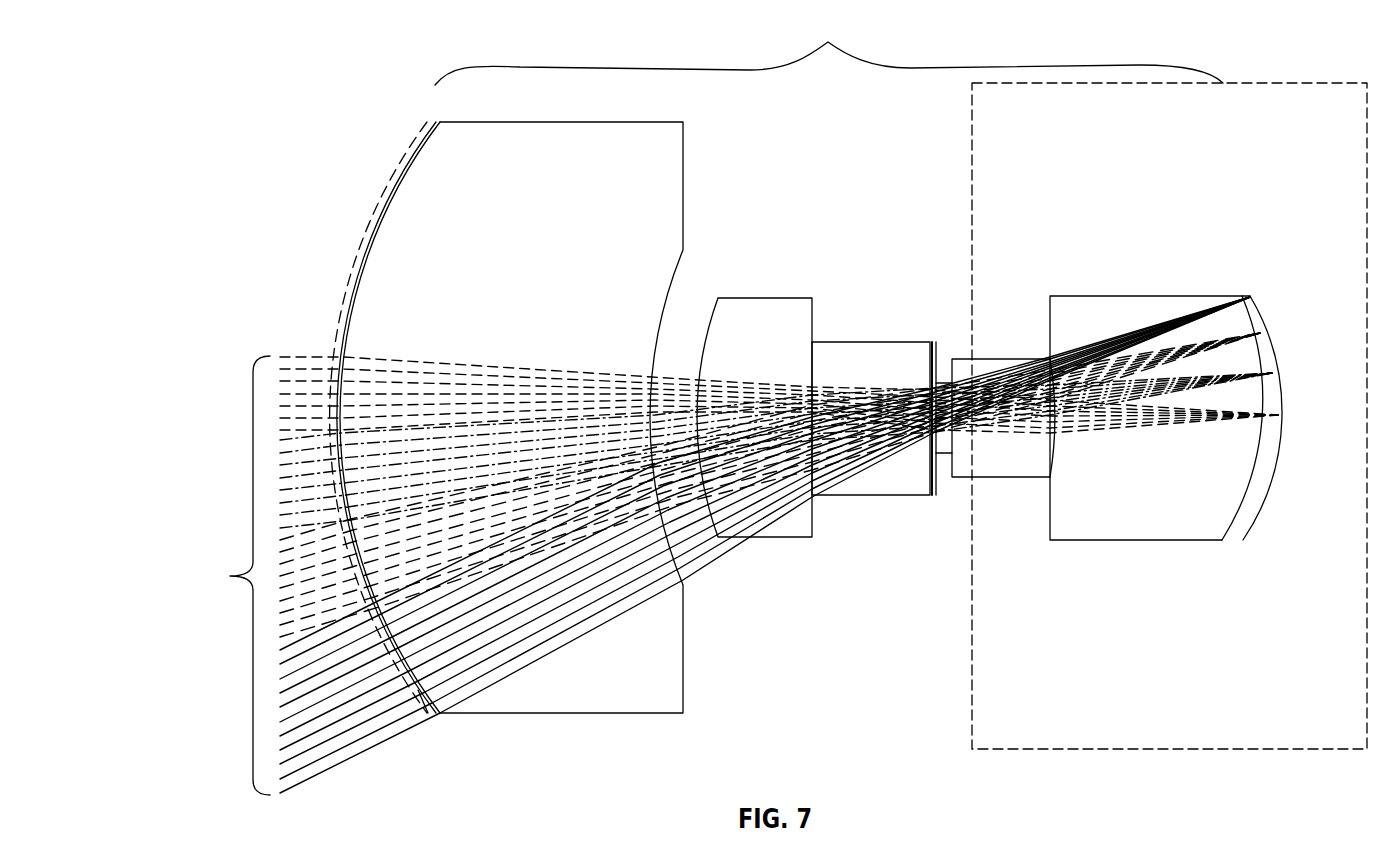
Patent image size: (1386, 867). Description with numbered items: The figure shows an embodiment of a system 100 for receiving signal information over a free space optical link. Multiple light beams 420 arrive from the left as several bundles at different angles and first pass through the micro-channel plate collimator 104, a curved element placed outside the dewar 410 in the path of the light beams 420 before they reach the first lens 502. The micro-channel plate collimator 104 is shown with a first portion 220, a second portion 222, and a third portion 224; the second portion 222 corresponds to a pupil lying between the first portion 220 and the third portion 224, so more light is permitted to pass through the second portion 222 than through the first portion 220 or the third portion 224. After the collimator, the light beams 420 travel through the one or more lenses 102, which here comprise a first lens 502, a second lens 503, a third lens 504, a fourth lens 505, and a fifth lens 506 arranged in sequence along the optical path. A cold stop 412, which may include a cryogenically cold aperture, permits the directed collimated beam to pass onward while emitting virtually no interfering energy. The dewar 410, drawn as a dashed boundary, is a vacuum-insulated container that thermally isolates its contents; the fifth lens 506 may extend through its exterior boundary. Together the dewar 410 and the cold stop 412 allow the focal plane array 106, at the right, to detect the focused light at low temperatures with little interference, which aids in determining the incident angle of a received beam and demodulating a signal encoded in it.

The system 100 is at (300, 86).
The lenses 102 is at (829, 51).
The micro-channel plate collimator 104 is at (351, 451).
The focal plane array 106 is at (1250, 310).
The first portion 220 is at (404, 161).
The second portion 222 is at (344, 341).
The third portion 224 is at (420, 714).
The dewar 410 is at (1330, 83).
The cold stop 412 is at (936, 494).
The light beams 420 is at (731, 546).
The first lens 502 is at (667, 118).
The second lens 503 is at (766, 297).
The third lens 504 is at (871, 341).
The fourth lens 505 is at (947, 382).
The fifth lens 506 is at (1000, 358).